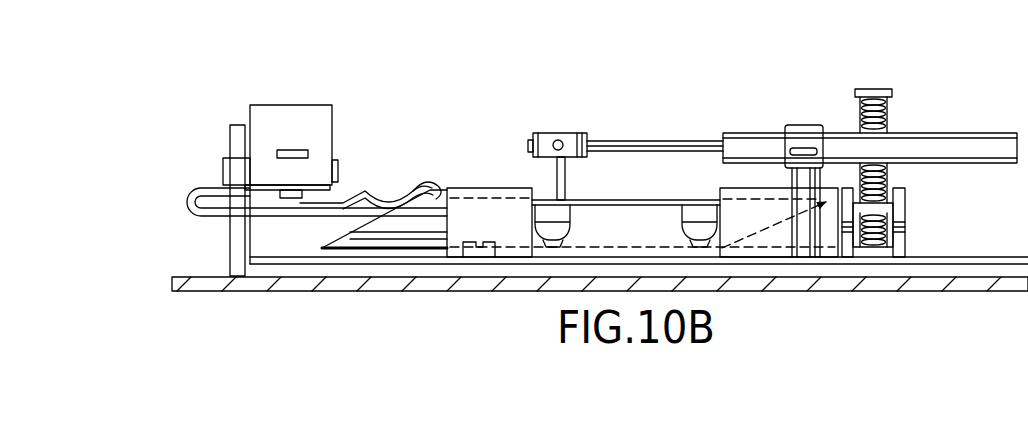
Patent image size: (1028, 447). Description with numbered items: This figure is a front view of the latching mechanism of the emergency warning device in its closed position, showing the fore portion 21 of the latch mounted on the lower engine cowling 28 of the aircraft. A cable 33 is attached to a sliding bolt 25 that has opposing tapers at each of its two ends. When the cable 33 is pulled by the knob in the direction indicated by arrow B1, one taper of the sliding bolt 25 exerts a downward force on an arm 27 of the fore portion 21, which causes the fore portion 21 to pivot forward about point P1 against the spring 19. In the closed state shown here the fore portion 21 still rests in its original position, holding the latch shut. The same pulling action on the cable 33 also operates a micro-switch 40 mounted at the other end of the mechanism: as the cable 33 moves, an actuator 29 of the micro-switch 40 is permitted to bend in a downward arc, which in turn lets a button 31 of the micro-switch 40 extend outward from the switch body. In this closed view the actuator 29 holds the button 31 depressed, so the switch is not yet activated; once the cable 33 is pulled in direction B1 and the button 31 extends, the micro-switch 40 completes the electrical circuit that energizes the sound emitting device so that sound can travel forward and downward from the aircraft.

The spring 19 is at (888, 112).
The fore portion 21 is at (862, 87).
The sliding bolt 25 is at (401, 252).
The arm 27 is at (895, 207).
The lower engine cowling 28 is at (244, 293).
The actuator 29 is at (410, 191).
The button 31 is at (299, 205).
The cable 33 is at (839, 126).
The micro-switch 40 is at (338, 117).
The arrow B1 is at (698, 123).
The point P1 is at (903, 222).